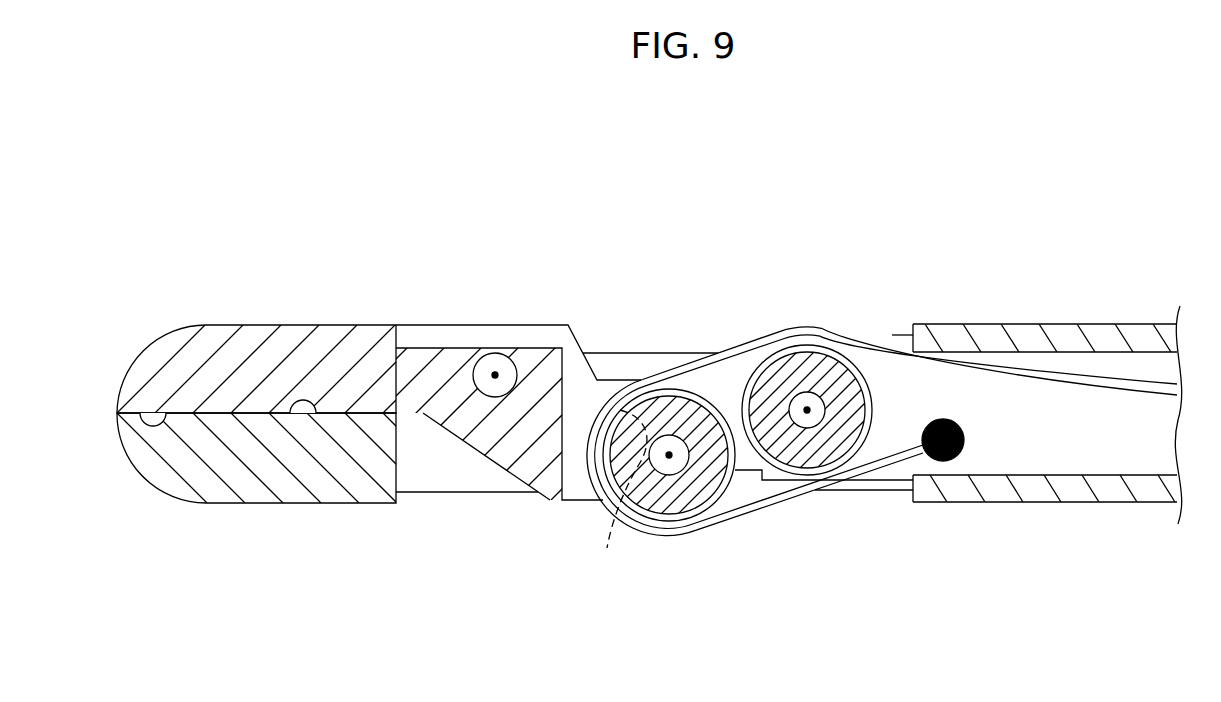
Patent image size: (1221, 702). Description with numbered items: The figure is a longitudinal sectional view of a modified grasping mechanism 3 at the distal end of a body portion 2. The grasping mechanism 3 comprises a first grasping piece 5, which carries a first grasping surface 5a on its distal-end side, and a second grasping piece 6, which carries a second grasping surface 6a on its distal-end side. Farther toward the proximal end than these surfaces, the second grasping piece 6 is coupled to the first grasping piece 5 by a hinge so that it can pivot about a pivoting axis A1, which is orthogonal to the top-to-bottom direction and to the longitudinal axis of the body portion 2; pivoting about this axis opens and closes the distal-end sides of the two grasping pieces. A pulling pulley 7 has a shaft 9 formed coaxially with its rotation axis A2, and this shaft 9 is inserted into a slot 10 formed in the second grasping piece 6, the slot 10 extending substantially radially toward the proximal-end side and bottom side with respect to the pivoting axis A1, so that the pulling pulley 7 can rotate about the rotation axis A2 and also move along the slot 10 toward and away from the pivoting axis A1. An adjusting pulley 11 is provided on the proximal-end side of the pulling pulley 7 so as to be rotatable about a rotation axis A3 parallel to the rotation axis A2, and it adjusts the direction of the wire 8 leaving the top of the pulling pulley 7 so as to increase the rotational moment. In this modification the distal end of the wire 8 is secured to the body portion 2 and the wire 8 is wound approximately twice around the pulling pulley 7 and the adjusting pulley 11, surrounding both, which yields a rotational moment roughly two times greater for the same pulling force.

The body portion 2 is at (1083, 324).
The grasping mechanism 3 is at (205, 204).
The first grasping piece 5 is at (233, 503).
The first grasping surface 5a is at (303, 400).
The second grasping piece 6 is at (288, 325).
The second grasping surface 6a is at (170, 412).
The pulling pulley 7 is at (698, 395).
The wire 8 is at (888, 338).
The shaft 9 is at (693, 470).
The slot 10 is at (608, 548).
The adjusting pulley 11 is at (862, 372).
The pivoting axis A1 is at (495, 375).
The rotation axis A2 is at (669, 458).
The rotation axis A3 is at (807, 413).